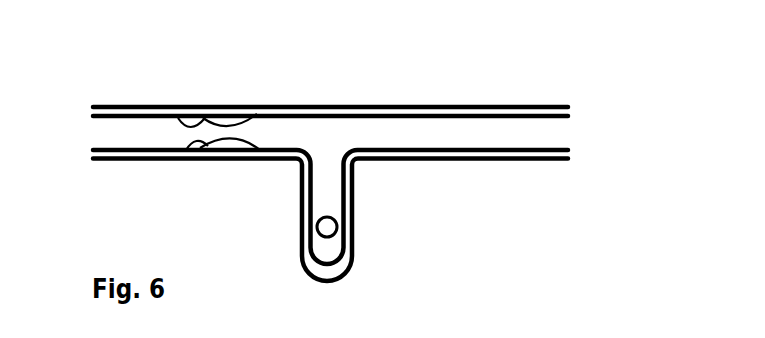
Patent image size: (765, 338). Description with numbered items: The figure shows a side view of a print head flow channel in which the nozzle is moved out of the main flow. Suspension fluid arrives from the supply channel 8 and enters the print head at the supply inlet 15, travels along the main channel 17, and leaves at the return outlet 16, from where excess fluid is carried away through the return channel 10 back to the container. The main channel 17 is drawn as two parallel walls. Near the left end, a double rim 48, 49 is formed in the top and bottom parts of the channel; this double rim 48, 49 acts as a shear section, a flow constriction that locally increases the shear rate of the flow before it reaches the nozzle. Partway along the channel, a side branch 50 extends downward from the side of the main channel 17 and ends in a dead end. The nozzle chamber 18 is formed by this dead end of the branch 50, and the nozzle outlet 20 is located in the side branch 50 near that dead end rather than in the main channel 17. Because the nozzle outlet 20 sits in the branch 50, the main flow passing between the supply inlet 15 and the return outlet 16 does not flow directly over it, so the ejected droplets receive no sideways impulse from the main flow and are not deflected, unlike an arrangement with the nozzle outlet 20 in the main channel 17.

The supply channel 8 is at (95, 132).
The return channel 10 is at (565, 135).
The supply inlet 15 is at (113, 163).
The return outlet 16 is at (553, 102).
The main channel 17 is at (389, 124).
The nozzle chamber 18 is at (327, 243).
The nozzle outlet 20 is at (336, 214).
The double rim 48 is at (178, 116).
The double rim 49 is at (190, 150).
The side branch 50 is at (303, 160).